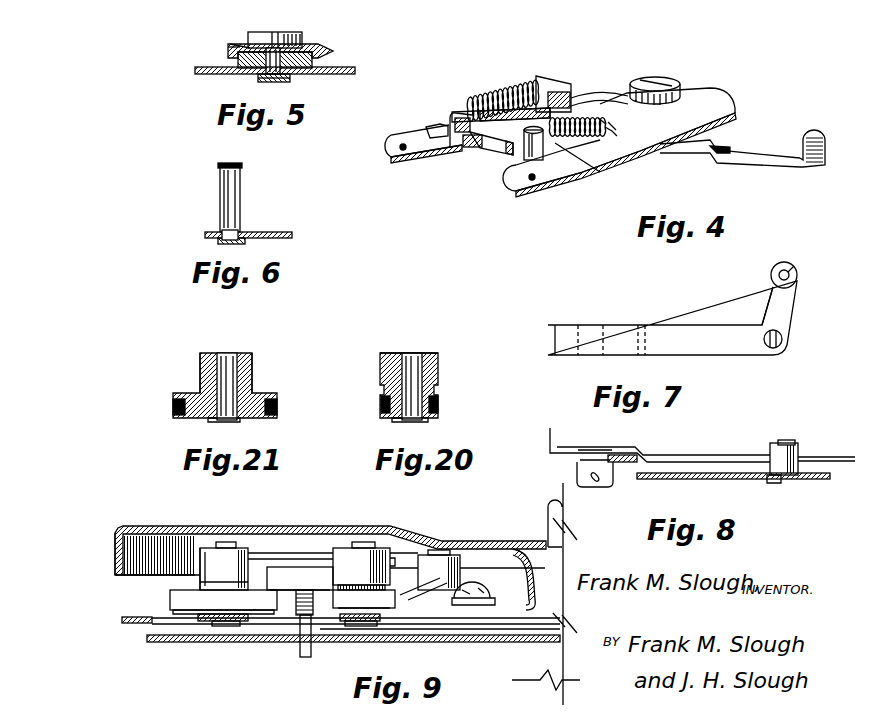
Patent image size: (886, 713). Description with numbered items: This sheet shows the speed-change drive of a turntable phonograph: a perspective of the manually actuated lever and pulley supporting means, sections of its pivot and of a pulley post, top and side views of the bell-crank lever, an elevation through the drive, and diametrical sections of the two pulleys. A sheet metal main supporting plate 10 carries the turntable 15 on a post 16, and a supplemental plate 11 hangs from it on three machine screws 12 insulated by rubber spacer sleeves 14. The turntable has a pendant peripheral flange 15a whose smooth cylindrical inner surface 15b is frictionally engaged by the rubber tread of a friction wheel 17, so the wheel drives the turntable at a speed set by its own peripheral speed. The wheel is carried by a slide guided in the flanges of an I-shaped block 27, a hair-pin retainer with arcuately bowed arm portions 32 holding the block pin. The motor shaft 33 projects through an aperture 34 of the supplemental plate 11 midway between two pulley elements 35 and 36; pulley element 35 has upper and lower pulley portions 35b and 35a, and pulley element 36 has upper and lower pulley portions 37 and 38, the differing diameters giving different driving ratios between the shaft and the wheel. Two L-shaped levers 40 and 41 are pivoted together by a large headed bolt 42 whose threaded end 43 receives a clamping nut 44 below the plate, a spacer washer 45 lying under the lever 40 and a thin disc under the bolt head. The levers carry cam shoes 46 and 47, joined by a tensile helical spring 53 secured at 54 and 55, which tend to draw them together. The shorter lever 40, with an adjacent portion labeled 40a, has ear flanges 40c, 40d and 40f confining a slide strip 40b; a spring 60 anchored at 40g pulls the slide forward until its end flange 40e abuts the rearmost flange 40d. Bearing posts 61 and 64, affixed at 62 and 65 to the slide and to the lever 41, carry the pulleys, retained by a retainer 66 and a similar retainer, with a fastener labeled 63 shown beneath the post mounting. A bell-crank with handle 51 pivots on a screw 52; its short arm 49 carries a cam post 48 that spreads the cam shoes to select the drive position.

In FIG. 9, the main supporting plate 10 is at (145, 625).
In FIG. 8, the supplemental plate 11 is at (738, 481).
In FIG. 9, the supplemental plate 11 is at (246, 643).
In FIG. 9, the machine screws 12 is at (480, 591).
In FIG. 9, the rubber spacer sleeves 14 is at (478, 631).
In FIG. 9, the turntable 15 is at (205, 534).
In FIG. 9, the pendant peripheral flange 15a is at (115, 554).
In FIG. 9, the cylindrical inner surface 15b is at (142, 586).
In FIG. 9, the post 16 is at (550, 507).
In FIG. 9, the friction wheel 17 is at (291, 553).
In FIG. 9, the I-shaped block 27 is at (408, 597).
In FIG. 9, the arcuately bowed arm portions 32 is at (432, 554).
In FIG. 9, the motor shaft 33 is at (302, 648).
In FIG. 9, the aperture 34 is at (322, 641).
In FIG. 20, the pulley element 35 is at (378, 386).
In FIG. 9, the pulley element 35 is at (362, 548).
In FIG. 20, the lower pulley portion 35a is at (442, 410).
In FIG. 9, the lower pulley portion 35a is at (390, 604).
In FIG. 20, the upper pulley portion 35b is at (440, 370).
In FIG. 9, the upper pulley portion 35b is at (404, 565).
In FIG. 21, the pulley element 36 is at (198, 374).
In FIG. 9, the pulley element 36 is at (250, 553).
In FIG. 21, the upper pulley portion 37 is at (254, 372).
In FIG. 9, the upper pulley portion 37 is at (200, 582).
In FIG. 21, the lower pulley portion 38 is at (280, 407).
In FIG. 9, the lower pulley portion 38 is at (171, 607).
In FIG. 5, the L-shaped lever 40 is at (320, 52).
In FIG. 4, the L-shaped lever 40 is at (602, 118).
In FIG. 9, the L-shaped lever 40 is at (372, 629).
In FIG. 6, the plate 40a is at (282, 233).
In FIG. 4, the plate 40a is at (468, 156).
In FIG. 4, the slide strip 40b is at (434, 129).
In FIG. 4, the ear flange 40c is at (451, 119).
In FIG. 4, the rearmost ear flange 40d is at (599, 95).
In FIG. 4, the end flange 40e is at (563, 82).
In FIG. 4, the forward ear flange 40f is at (460, 118).
In FIG. 4, the spring anchoring point 40g is at (545, 78).
In FIG. 5, the L-shaped lever 41 is at (232, 48).
In FIG. 4, the L-shaped lever 41 is at (705, 101).
In FIG. 9, the L-shaped lever 41 is at (212, 624).
In FIG. 5, the headed bolt 42 is at (286, 45).
In FIG. 4, the headed bolt 42 is at (650, 79).
In FIG. 5, the screw-threaded end 43 is at (286, 80).
In FIG. 5, the clamping nut 44 is at (262, 78).
In FIG. 5, the spacer washer 45 is at (350, 70).
In FIG. 4, the cam shoe 46 is at (498, 146).
In FIG. 4, the cam shoe 47 is at (556, 144).
In FIG. 4, the cam post 48 is at (526, 154).
In FIG. 7, the cam post 48 is at (772, 268).
In FIG. 8, the cam post 48 is at (788, 444).
In FIG. 7, the short arm 49 is at (772, 307).
In FIG. 8, the short arm 49 is at (802, 463).
In FIG. 4, the handle 51 is at (790, 154).
In FIG. 7, the handle 51 is at (622, 328).
In FIG. 8, the handle 51 is at (572, 447).
In FIG. 7, the screw 52 is at (783, 340).
In FIG. 4, the tensile helical spring 53 is at (610, 122).
In FIG. 4, the spring end attachment 54 is at (501, 116).
In FIG. 4, the spring end attachment 55 is at (614, 135).
In FIG. 4, the tensile helical spring 60 is at (505, 94).
In FIG. 6, the bearing post 61 is at (237, 192).
In FIG. 9, the bearing post 61 is at (355, 547).
In FIG. 6, the post attachment 62 is at (240, 232).
In FIG. 4, the post attachment 62 is at (397, 144).
In FIG. 6, the nut 63 is at (216, 240).
In FIG. 9, the bearing post 64 is at (217, 542).
In FIG. 4, the post attachment 65 is at (550, 185).
In FIG. 9, the retainer 66 is at (385, 548).